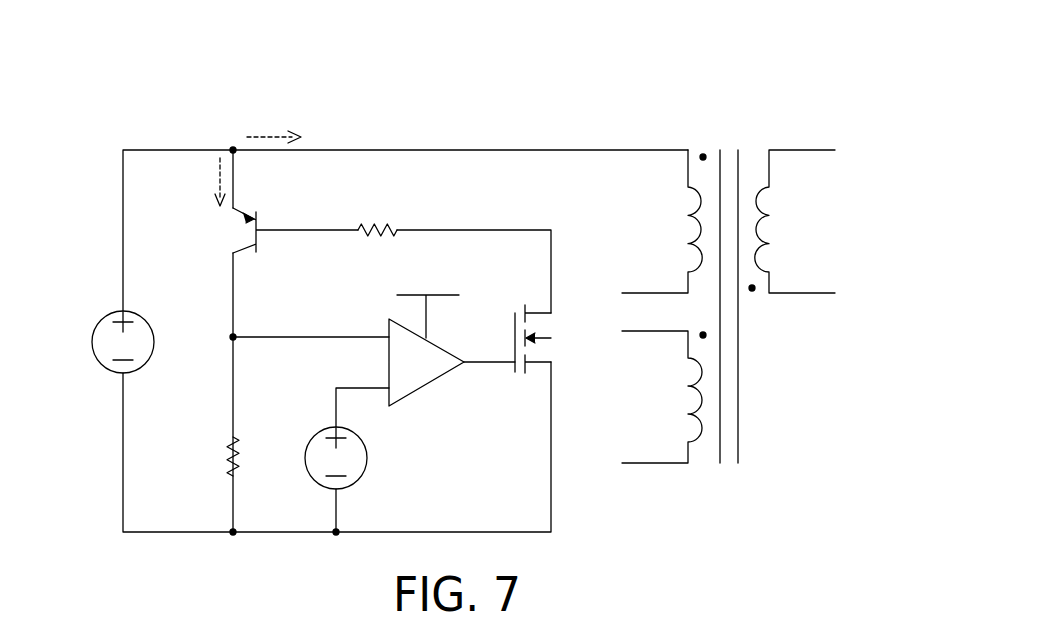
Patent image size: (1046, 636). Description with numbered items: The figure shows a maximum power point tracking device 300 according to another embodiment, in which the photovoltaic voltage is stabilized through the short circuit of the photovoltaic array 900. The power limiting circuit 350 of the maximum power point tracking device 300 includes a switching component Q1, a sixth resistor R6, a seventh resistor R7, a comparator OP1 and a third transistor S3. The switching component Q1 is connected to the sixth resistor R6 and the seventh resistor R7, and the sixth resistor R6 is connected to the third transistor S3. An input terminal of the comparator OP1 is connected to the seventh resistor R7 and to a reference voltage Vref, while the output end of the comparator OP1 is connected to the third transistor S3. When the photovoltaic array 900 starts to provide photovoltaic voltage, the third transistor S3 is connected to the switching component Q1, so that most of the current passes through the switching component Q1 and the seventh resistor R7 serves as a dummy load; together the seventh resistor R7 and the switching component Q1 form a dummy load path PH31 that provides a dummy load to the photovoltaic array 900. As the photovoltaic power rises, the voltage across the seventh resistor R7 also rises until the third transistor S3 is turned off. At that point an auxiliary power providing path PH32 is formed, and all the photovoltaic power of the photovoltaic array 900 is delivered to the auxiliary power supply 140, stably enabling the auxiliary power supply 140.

The maximum power point tracking device 300 is at (862, 35).
The power limiting circuit 350 is at (407, 118).
The auxiliary power supply 140 is at (745, 115).
The photovoltaic array 900 is at (100, 320).
The dummy load path PH31 is at (216, 182).
The auxiliary power providing path PH32 is at (272, 134).
The switching component Q1 is at (276, 230).
The sixth resistor R6 is at (377, 245).
The seventh resistor R7 is at (215, 456).
The reference voltage Vref is at (323, 460).
The comparator OP1 is at (430, 385).
The third transistor S3 is at (517, 339).